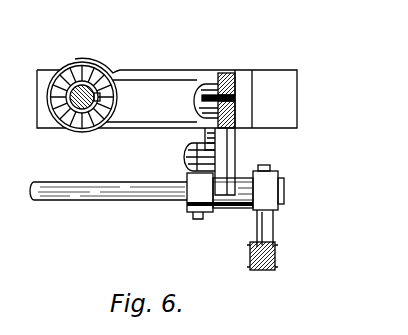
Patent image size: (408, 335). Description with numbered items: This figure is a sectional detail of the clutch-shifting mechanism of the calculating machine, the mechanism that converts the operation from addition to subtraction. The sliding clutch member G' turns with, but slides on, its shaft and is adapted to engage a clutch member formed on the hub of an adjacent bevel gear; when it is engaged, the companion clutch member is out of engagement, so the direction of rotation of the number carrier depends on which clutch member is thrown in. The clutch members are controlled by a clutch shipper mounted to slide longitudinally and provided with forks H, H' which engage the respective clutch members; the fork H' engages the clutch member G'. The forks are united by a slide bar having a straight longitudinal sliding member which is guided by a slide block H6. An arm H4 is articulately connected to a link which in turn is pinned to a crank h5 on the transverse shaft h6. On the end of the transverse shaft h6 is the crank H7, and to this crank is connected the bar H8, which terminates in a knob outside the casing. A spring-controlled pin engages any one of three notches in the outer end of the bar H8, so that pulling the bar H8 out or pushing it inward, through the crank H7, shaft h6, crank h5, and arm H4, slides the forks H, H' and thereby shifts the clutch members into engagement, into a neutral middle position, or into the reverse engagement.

The sliding clutch member G' is at (82, 79).
The fork H' is at (167, 85).
The fork H is at (218, 116).
The slide block H6 is at (222, 73).
The arm H4 is at (157, 146).
The transverse shaft h6 is at (122, 201).
The crank h5 is at (198, 192).
The crank H7 is at (258, 227).
The bar H8 is at (264, 272).